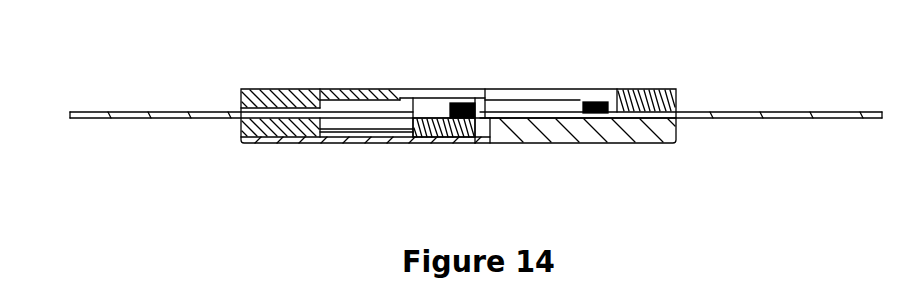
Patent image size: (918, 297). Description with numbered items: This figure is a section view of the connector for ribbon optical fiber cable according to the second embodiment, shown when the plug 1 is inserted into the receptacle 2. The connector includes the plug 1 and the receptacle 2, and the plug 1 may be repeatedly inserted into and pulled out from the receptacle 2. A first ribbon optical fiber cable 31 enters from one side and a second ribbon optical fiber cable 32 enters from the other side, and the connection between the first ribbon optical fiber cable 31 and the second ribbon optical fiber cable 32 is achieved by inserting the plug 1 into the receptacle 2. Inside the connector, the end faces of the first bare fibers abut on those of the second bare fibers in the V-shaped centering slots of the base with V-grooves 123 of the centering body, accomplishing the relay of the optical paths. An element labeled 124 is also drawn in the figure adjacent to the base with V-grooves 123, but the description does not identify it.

The plug 1 is at (345, 159).
The receptacle 2 is at (458, 159).
The first ribbon optical fiber cable 31 is at (227, 72).
The second ribbon optical fiber cable 32 is at (685, 61).
The base with V-grooves 123 is at (393, 164).
The contact 124 is at (405, 78).